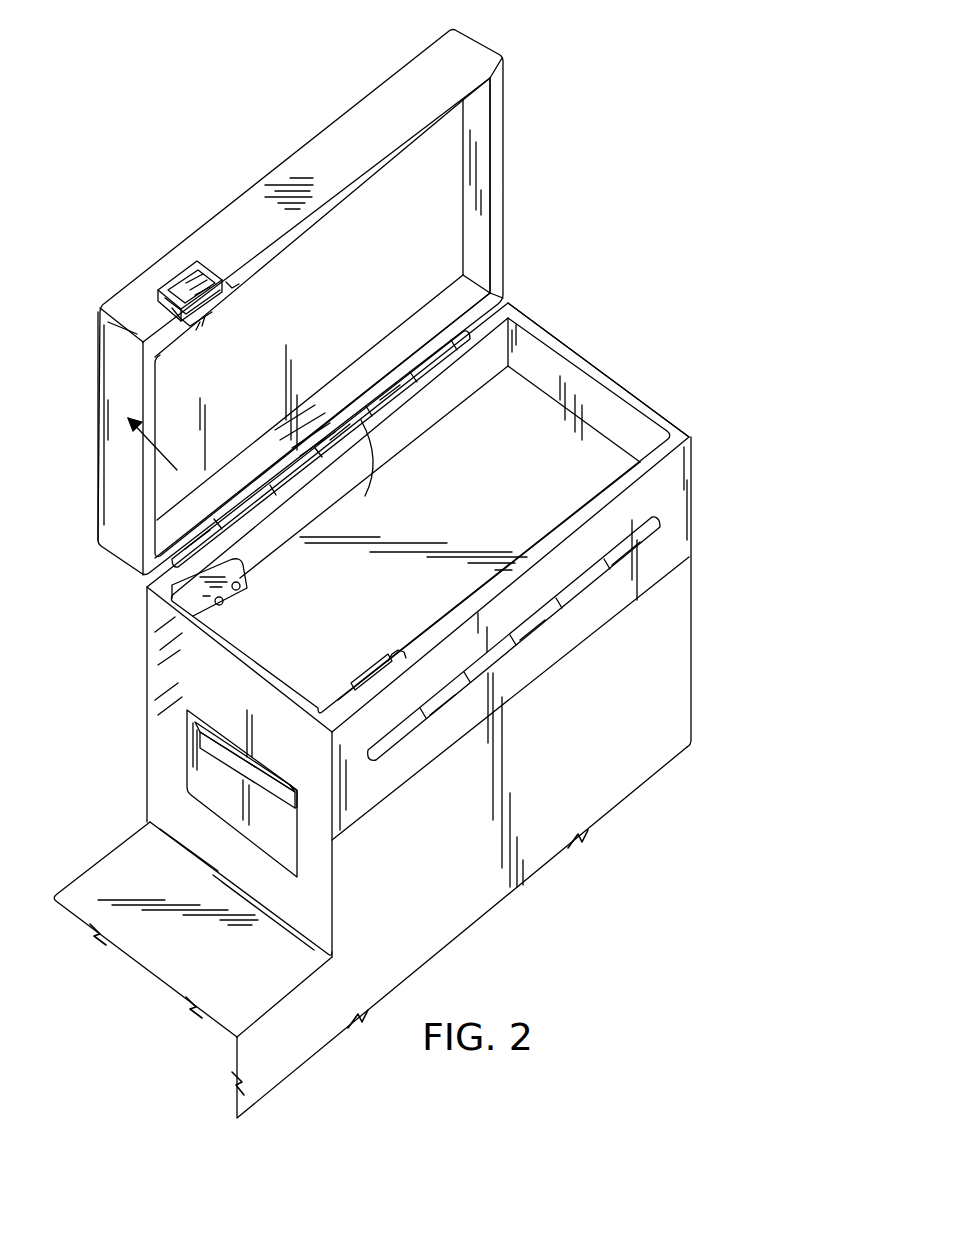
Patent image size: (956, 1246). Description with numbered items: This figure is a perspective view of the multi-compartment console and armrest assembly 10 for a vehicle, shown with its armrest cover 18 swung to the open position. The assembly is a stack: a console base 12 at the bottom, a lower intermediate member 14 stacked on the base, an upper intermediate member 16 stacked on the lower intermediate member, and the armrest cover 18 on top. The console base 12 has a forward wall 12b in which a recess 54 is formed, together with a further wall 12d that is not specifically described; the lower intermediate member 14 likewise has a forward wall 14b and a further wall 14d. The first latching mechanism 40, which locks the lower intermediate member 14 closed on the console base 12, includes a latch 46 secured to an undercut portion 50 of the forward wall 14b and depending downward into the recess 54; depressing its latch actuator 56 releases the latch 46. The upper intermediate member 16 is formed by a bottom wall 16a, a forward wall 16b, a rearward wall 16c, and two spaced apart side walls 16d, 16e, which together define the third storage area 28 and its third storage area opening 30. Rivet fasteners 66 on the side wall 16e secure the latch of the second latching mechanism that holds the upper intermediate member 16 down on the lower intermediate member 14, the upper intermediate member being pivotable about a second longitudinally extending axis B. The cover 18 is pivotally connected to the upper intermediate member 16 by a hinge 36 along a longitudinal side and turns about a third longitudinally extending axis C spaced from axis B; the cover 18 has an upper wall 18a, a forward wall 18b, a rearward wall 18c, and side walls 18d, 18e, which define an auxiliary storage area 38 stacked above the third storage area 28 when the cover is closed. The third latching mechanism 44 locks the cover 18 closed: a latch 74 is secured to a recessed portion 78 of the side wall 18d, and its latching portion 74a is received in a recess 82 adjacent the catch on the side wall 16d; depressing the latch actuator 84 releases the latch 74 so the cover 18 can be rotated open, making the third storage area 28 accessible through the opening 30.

The multi-compartment console and armrest assembly 10 is at (620, 106).
The console base 12 is at (616, 817).
The forward wall 12b is at (287, 900).
The shell front panel 12d is at (474, 893).
The lower intermediate member 14 is at (698, 541).
The forward wall 14b is at (176, 705).
The box front wall 14d is at (565, 632).
The upper intermediate member 16 is at (693, 468).
The upper intermediate member bottom wall 16a is at (586, 456).
The upper intermediate member forward wall 16b is at (185, 652).
The upper intermediate member rearward wall 16c is at (600, 368).
The upper intermediate member side wall 16d is at (643, 497).
The upper intermediate member side wall 16e is at (403, 428).
The armrest cover 18 is at (321, 129).
The cover upper wall 18a is at (446, 162).
The cover forward wall 18b is at (130, 477).
The cover rearward wall 18c is at (483, 224).
The cover side wall 18d is at (253, 232).
The cover side wall 18e is at (243, 484).
The third storage area 28 is at (468, 519).
The third storage area opening 30 is at (556, 355).
The hinge 36 is at (440, 347).
The auxiliary storage area 38 is at (343, 276).
The first latching mechanism 40 is at (190, 765).
The third latching mechanism 44 is at (181, 274).
The latch 46 is at (186, 812).
The undercut portion 50 is at (222, 742).
The recess 54 is at (226, 800).
The latch actuator 56 is at (268, 785).
The rivet fasteners 66 is at (222, 605).
The latch 74 is at (201, 265).
The latching portion 74a is at (205, 322).
The recessed portion 78 is at (157, 286).
The recess 82 is at (374, 672).
The latch actuator 84 is at (173, 280).
The second longitudinally extending axis B is at (400, 746).
The third longitudinally extending axis C is at (368, 468).